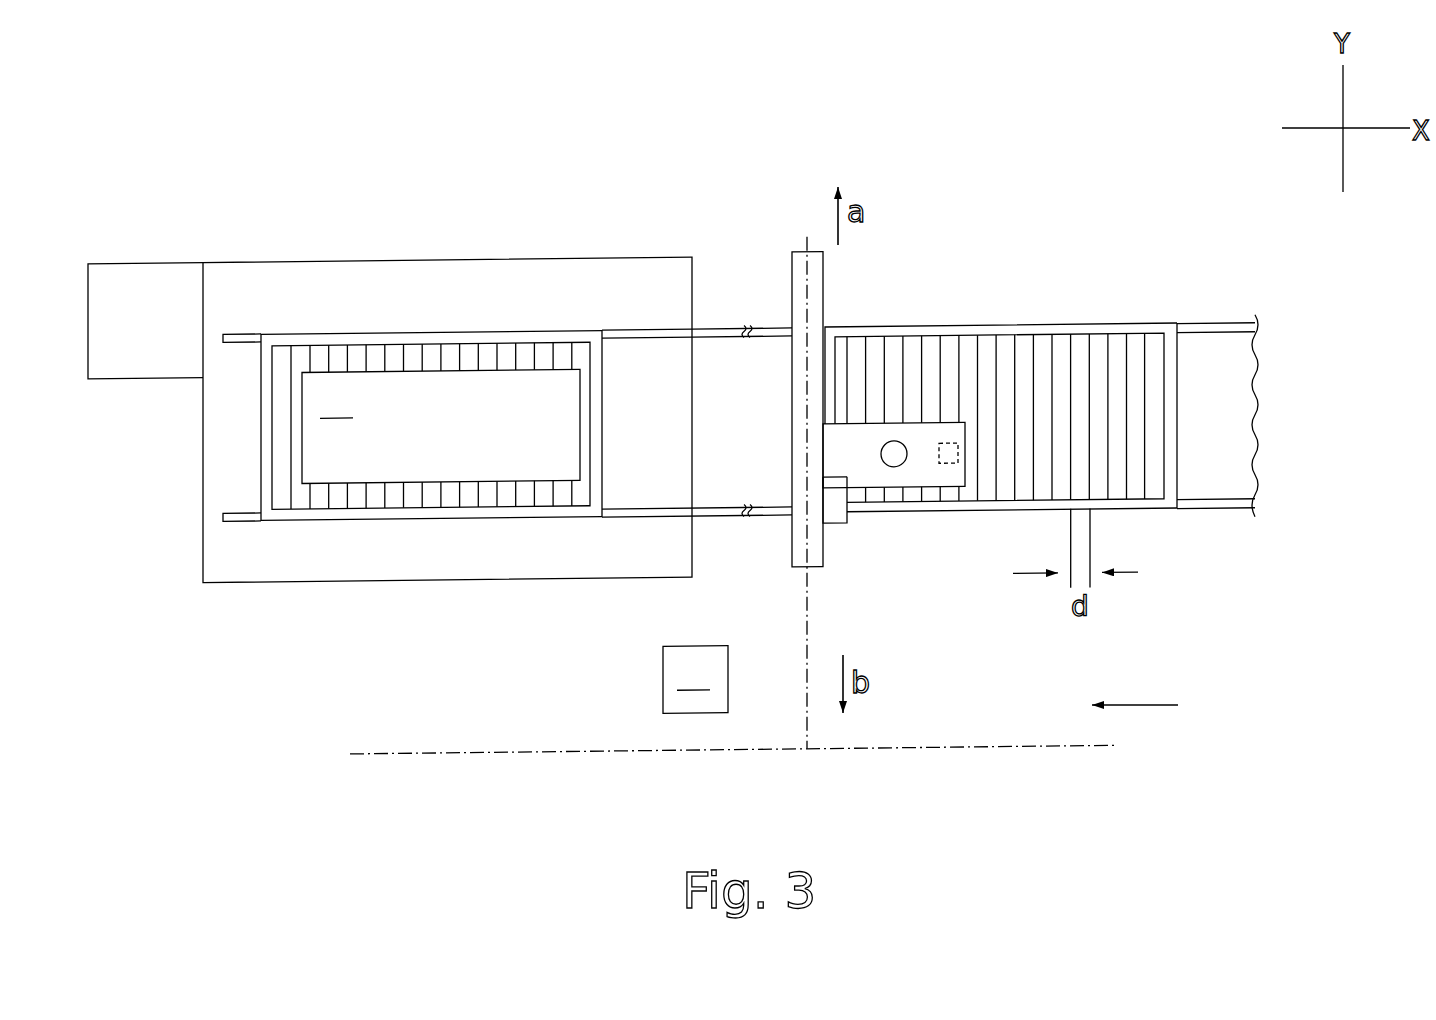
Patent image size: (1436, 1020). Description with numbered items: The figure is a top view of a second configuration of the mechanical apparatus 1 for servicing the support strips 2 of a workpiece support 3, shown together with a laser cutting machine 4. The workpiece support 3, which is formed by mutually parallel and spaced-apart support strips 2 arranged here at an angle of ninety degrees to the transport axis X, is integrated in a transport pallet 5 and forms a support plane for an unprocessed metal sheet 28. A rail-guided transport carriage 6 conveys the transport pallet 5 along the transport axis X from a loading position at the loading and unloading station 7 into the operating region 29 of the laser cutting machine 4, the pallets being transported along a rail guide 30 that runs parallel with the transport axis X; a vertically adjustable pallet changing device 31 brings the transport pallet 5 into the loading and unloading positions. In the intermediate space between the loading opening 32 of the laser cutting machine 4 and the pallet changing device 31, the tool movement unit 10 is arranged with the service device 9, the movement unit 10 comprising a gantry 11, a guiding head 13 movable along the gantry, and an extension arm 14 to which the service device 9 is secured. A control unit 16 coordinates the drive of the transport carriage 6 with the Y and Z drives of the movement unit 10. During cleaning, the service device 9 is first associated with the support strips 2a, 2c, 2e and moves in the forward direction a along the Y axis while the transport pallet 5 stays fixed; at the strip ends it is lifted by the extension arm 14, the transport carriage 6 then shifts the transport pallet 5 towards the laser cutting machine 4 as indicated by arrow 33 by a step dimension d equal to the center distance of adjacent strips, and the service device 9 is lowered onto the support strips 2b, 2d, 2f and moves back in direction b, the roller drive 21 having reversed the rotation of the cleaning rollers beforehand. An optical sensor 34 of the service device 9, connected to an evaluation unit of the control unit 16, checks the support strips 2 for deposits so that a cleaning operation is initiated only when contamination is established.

The mechanical apparatus 1 is at (742, 249).
The support strips 2 is at (1148, 368).
The support strip 2a is at (865, 332).
The support strip 2b is at (885, 507).
The support strip 2c is at (902, 332).
The support strip 2d is at (923, 507).
The support strip 2e is at (943, 332).
The support strip 2f is at (962, 507).
The workpiece support 3 is at (281, 481).
The laser cutting machine 4 is at (257, 250).
The transport pallet 5 is at (263, 533).
The transport carriage 6 is at (320, 536).
The loading and unloading station 7 is at (1165, 296).
The service device 9 is at (953, 422).
The tool movement unit 10 is at (845, 544).
The gantry 11 is at (793, 565).
The guiding head 13 is at (833, 510).
The extension arm 14 is at (772, 459).
The control unit 16 is at (695, 680).
The roller drive 21 is at (883, 450).
The unprocessed metal sheet 28 is at (441, 426).
The operating region 29 is at (428, 327).
The rail guide 30 is at (625, 325).
The pallet changing device 31 is at (1040, 302).
The loading opening 32 is at (685, 320).
The arrow 33 is at (1138, 712).
The optical sensor 34 is at (960, 447).